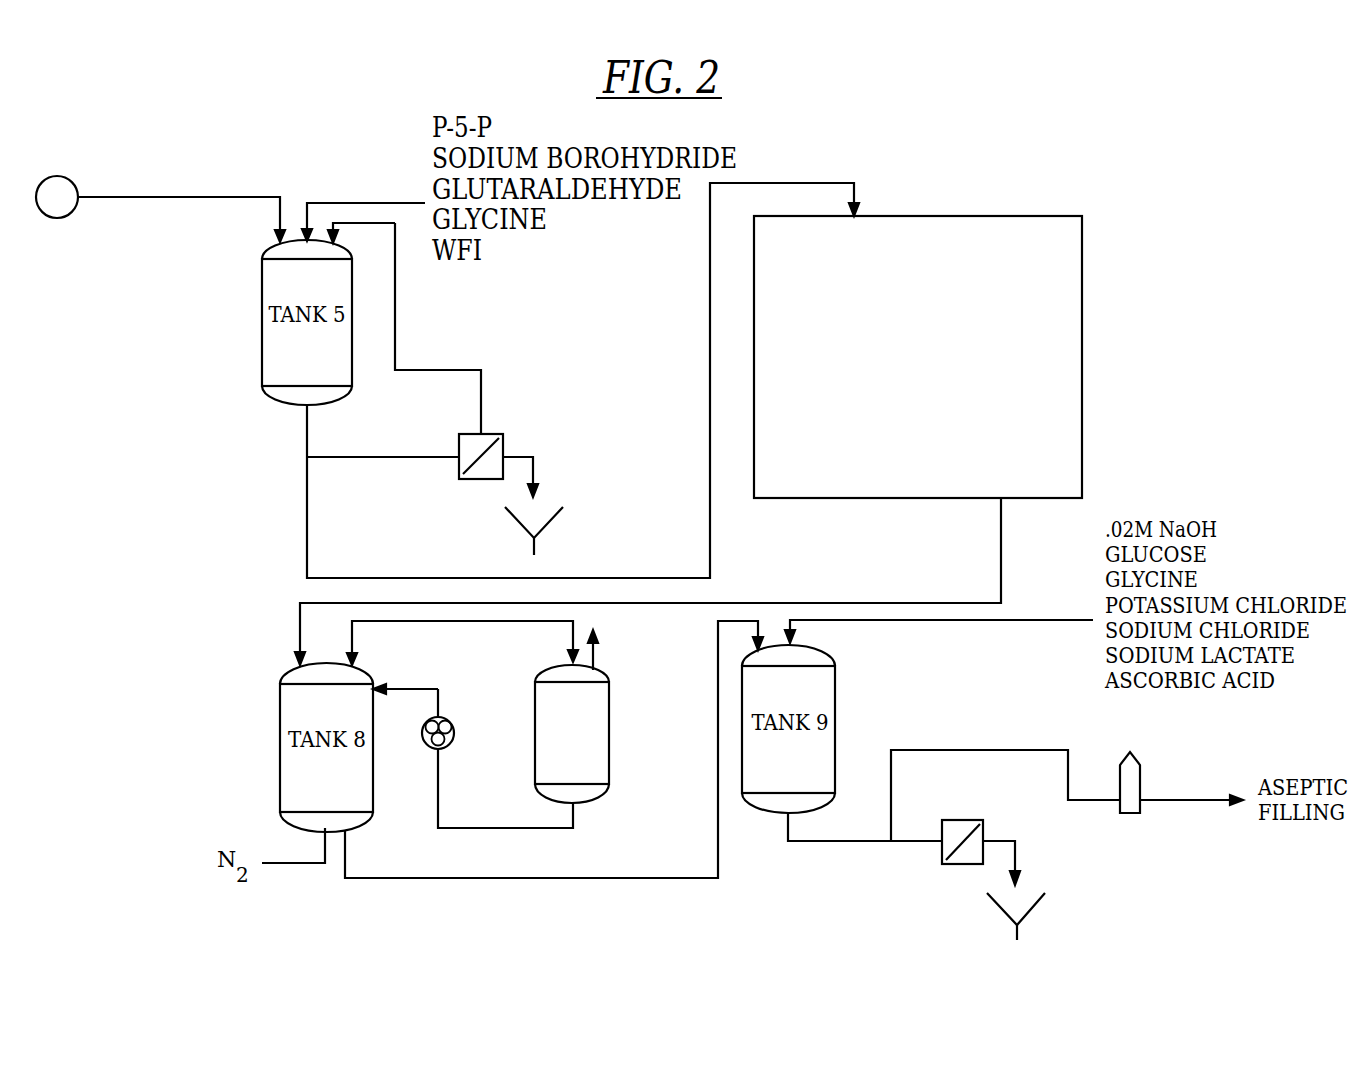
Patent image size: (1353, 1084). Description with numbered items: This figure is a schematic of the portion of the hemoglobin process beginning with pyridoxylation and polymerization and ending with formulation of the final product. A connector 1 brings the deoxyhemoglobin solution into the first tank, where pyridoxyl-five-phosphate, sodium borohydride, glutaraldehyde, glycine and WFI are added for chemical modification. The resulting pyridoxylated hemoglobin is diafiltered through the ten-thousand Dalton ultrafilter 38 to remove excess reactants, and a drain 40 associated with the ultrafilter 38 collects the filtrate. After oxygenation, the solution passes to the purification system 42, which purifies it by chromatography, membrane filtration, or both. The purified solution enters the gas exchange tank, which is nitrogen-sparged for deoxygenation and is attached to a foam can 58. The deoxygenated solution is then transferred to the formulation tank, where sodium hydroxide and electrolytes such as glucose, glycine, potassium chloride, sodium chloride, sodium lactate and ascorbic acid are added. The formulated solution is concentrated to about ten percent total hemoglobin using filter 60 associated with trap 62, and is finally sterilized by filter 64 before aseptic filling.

The connector from FIG. 1 is at (57, 197).
The ultrafilter 38 is at (497, 433).
The drain 40 is at (560, 537).
The purification system 42 is at (1082, 410).
The foam can 58 is at (609, 742).
The filter 60 is at (975, 818).
The trap 62 is at (1042, 921).
The filter 64 is at (1142, 773).